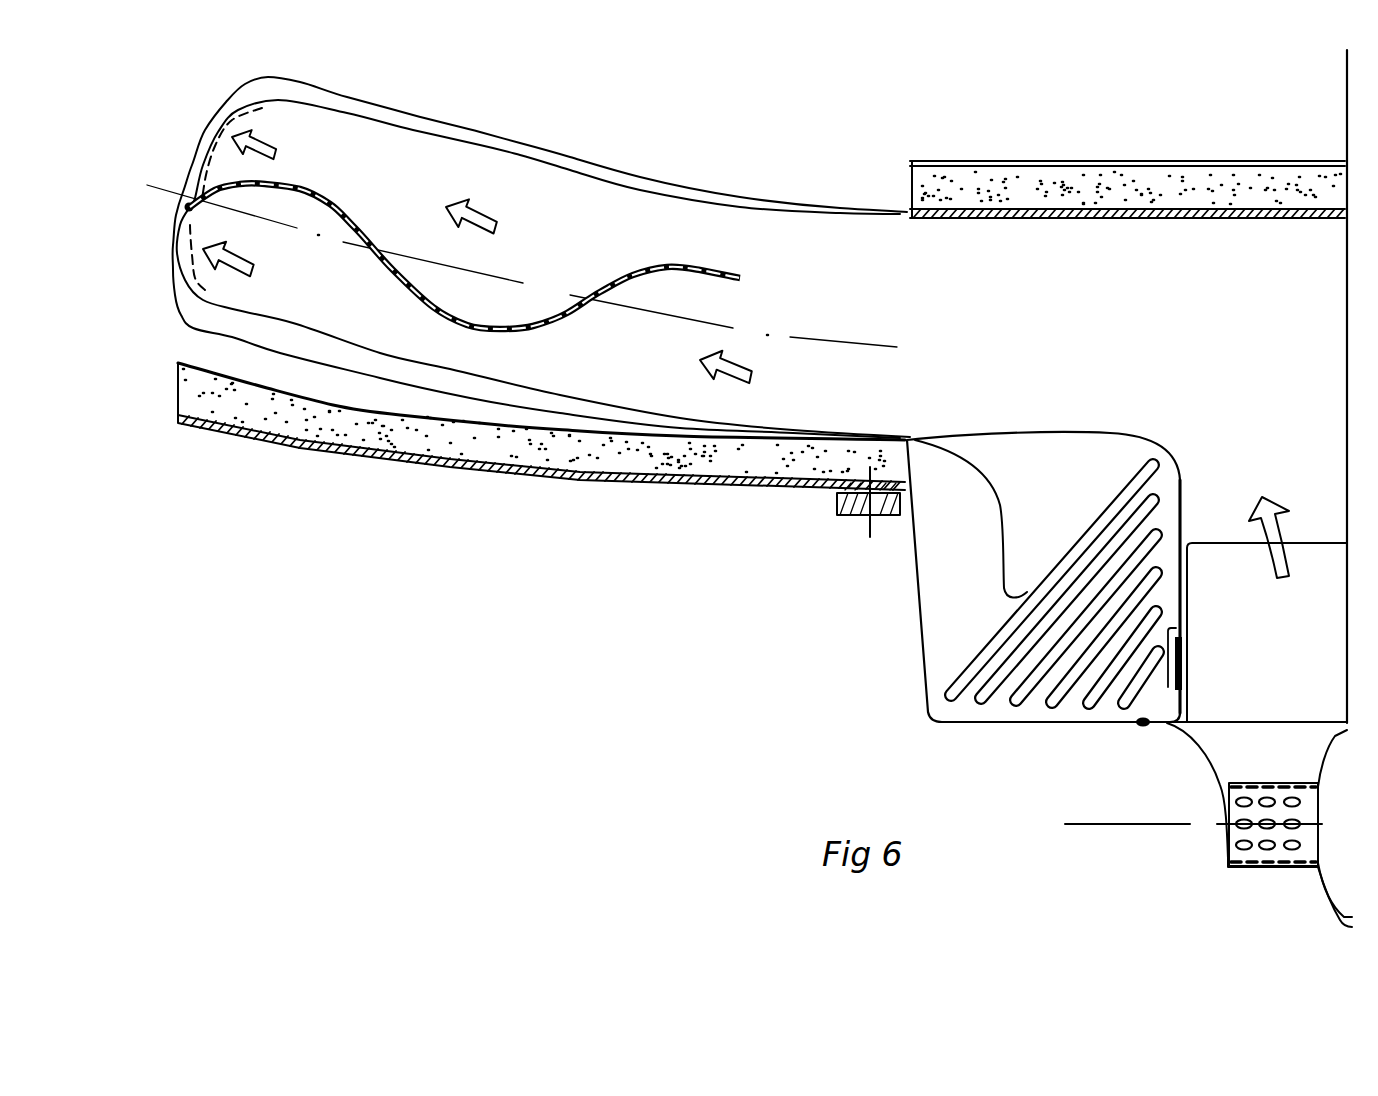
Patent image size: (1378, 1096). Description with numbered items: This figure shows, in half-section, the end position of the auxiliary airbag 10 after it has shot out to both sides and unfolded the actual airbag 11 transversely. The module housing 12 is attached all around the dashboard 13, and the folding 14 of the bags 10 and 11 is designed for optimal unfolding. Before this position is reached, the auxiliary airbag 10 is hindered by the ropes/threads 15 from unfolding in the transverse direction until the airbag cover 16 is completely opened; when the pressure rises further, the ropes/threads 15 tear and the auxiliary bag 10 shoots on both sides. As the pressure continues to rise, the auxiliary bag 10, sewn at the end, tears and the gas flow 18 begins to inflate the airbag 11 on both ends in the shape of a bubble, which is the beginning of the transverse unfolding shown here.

The auxiliary airbag 10 is at (508, 157).
The airbag 11 is at (477, 131).
The module housing 12 is at (913, 578).
The dashboard 13 is at (760, 466).
The folding 14 is at (976, 672).
The ropes/threads 15 is at (687, 264).
The airbag cover 16 is at (980, 184).
The gas flow 18 is at (274, 140).